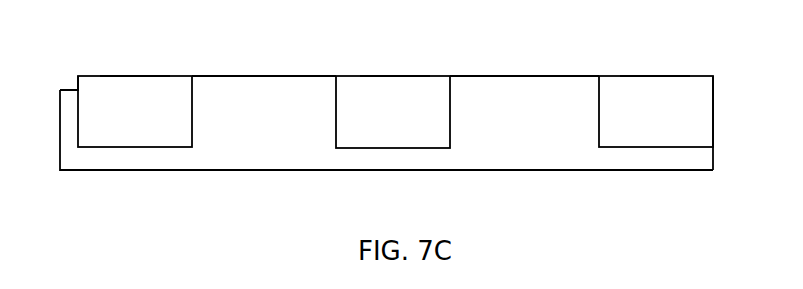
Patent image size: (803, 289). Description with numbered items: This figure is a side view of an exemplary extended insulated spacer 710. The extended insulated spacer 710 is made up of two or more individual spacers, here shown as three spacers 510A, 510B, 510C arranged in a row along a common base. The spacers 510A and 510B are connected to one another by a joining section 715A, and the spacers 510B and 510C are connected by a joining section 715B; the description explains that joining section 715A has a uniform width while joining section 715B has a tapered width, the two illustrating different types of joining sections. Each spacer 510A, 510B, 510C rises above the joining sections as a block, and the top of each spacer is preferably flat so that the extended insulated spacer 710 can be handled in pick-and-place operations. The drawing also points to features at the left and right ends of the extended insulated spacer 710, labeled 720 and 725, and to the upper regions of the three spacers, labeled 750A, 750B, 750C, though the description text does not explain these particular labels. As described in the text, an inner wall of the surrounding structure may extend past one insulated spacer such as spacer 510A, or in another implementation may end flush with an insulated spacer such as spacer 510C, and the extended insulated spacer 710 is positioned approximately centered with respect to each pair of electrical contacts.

The extended insulated spacer 710 is at (231, 201).
The first end step 720 is at (73, 82).
The second end 725 is at (714, 123).
The joining section 715A is at (264, 96).
The joining section 715B is at (524, 96).
The spacer 510A is at (135, 111).
The spacer 510B is at (393, 112).
The spacer 510C is at (656, 111).
The first interface 750A is at (157, 75).
The second interface 750B is at (418, 75).
The third interface 750C is at (680, 76).